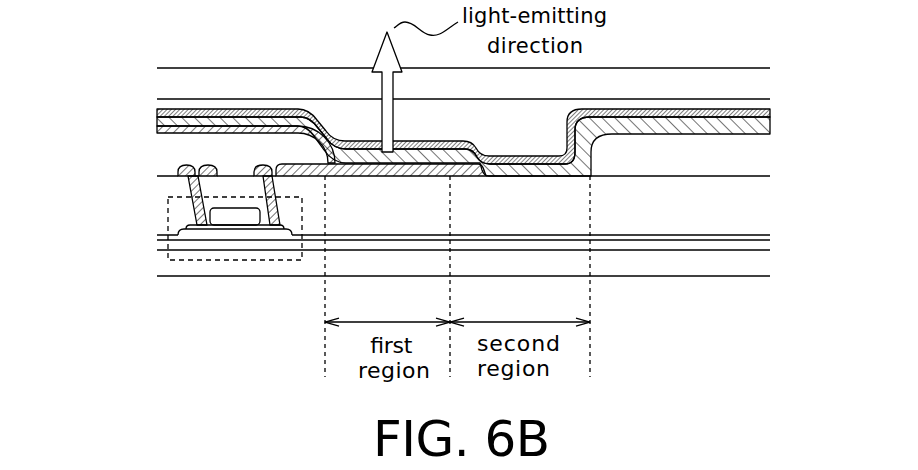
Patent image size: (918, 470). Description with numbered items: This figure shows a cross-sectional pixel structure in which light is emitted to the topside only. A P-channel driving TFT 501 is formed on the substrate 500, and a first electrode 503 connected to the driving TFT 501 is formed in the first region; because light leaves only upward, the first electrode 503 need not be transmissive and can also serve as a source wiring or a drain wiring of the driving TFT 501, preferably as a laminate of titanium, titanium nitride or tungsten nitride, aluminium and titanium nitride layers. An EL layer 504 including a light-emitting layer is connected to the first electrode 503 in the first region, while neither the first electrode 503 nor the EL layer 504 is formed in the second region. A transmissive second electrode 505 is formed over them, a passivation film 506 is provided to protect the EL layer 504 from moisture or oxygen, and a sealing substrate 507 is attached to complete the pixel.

The substrate 500 is at (732, 273).
The P-channel driving TFT 501 is at (255, 260).
The first electrode 503 is at (401, 177).
The EL layer 504 is at (305, 125).
The second electrode 505 is at (720, 120).
The passivation film 506 is at (212, 110).
The sealing substrate 507 is at (638, 88).